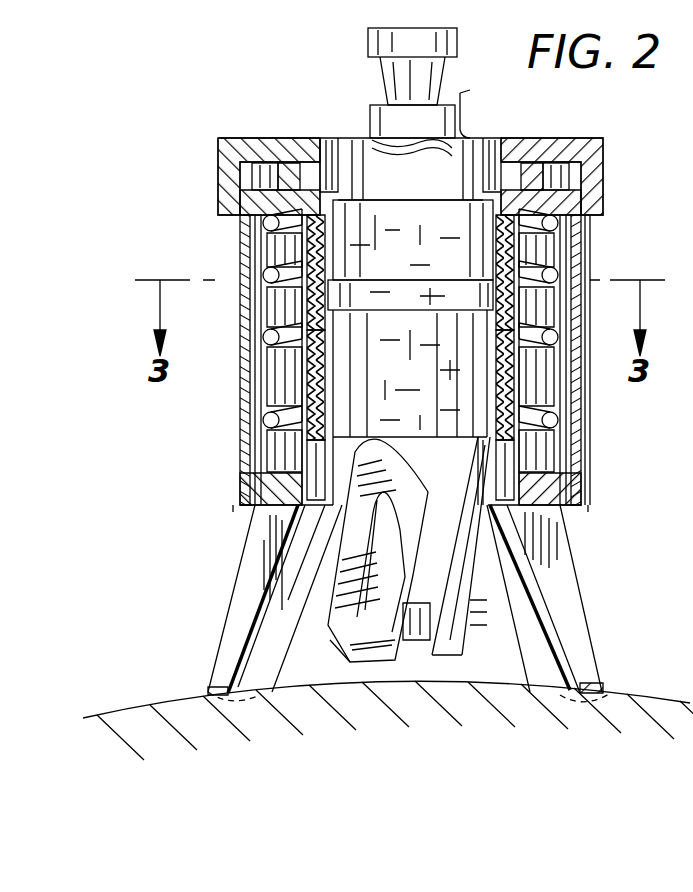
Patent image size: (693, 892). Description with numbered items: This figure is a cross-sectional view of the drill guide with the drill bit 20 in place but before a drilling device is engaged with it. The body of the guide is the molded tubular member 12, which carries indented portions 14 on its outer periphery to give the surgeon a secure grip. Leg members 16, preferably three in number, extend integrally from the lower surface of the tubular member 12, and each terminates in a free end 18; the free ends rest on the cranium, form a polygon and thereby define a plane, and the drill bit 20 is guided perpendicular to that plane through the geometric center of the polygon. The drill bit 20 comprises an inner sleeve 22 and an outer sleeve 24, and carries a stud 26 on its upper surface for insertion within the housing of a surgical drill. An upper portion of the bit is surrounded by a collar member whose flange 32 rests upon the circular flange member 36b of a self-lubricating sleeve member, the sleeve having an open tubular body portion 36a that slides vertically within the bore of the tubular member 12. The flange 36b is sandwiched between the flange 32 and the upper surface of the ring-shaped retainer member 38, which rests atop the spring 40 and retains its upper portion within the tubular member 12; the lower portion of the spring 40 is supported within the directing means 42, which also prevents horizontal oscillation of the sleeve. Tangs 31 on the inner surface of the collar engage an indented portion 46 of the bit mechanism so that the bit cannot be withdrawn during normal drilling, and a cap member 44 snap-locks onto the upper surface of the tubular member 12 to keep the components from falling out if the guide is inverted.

The tubular member 12 is at (222, 185).
The indented portions 14 is at (262, 360).
The leg members 16 is at (250, 598).
The free end 18 is at (205, 695).
The drill bit 20 is at (345, 665).
The inner sleeve 22 is at (378, 550).
The outer sleeve 24 is at (328, 520).
The stud 26 is at (380, 82).
The tangs 31 is at (333, 283).
The flange 32 is at (318, 180).
The open tubular body portion 36a is at (305, 388).
The circular flange member 36b is at (290, 193).
The retainer member 38 is at (252, 190).
The spring 40 is at (577, 397).
The directing means 42 is at (277, 457).
The cap member 44 is at (253, 145).
The indented portion 46 is at (365, 287).